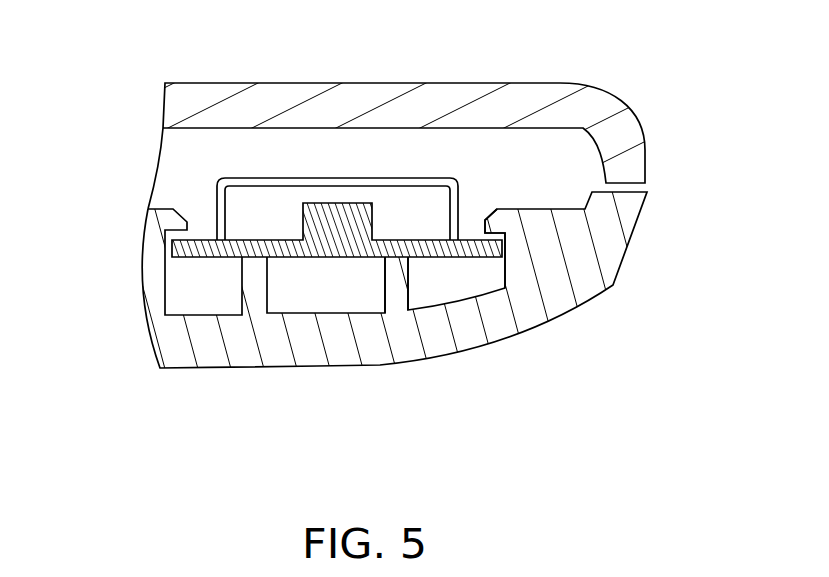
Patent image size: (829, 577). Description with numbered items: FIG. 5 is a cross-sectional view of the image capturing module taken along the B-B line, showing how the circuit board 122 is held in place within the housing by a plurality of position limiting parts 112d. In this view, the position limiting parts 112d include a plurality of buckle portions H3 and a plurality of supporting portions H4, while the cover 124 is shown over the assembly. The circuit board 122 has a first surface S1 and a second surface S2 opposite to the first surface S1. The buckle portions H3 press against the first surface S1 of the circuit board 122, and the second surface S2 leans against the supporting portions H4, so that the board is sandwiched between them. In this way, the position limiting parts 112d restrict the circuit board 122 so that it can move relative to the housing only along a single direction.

The cover 124 is at (397, 213).
The circuit board 122 is at (173, 240).
The first surface S1 is at (202, 228).
The second surface S2 is at (213, 268).
The supporting portions H4 is at (398, 287).
The buckle portions H3 is at (498, 220).
The position limiting parts 112d is at (580, 441).